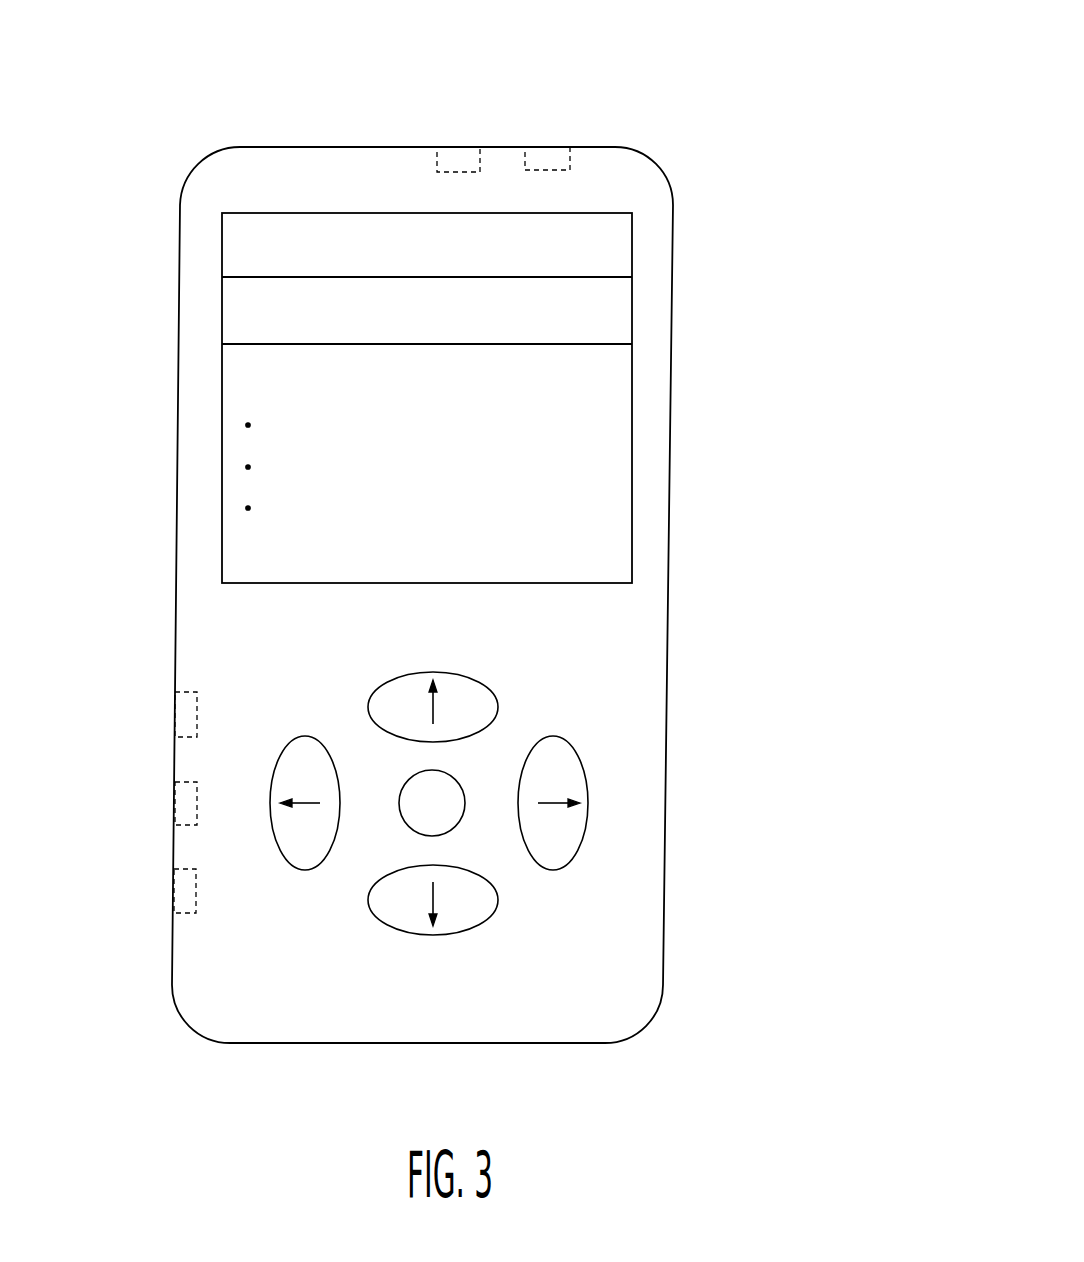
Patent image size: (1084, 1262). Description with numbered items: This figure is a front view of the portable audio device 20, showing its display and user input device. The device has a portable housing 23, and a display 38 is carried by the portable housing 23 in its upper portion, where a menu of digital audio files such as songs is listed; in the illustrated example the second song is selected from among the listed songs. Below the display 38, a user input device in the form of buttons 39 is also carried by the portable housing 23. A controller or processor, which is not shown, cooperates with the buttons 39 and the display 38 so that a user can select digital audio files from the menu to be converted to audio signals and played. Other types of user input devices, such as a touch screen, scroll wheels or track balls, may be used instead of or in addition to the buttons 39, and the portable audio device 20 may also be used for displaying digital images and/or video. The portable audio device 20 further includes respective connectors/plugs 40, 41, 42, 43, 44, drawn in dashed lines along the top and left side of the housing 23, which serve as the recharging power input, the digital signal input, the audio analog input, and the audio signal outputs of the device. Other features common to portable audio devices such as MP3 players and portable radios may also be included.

The portable audio device 20 is at (752, 110).
The portable housing 23 is at (673, 317).
The display 38 is at (630, 505).
The buttons 39 is at (580, 752).
The connector/plug 40 is at (173, 712).
The connector/plug 41 is at (173, 798).
The connector/plug 42 is at (172, 887).
The connector/plug 43 is at (458, 147).
The connector/plug 44 is at (545, 147).